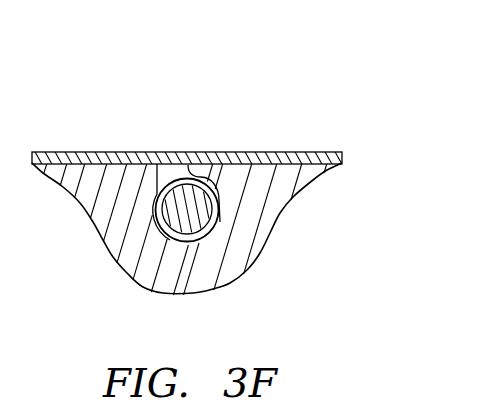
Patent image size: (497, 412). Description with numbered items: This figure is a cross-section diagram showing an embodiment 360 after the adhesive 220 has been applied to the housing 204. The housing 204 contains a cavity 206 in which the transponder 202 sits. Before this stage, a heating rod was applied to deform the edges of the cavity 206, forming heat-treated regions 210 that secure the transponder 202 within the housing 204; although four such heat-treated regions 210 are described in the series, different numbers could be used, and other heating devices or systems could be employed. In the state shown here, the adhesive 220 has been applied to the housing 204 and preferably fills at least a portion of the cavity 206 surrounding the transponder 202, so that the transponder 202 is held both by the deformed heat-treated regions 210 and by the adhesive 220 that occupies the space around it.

The embodiment 360 is at (286, 51).
The adhesive 220 is at (343, 161).
The housing 204 is at (266, 243).
The transponder 202 is at (214, 231).
The cavity 206 is at (162, 246).
The heat-treated regions 210 is at (136, 180).